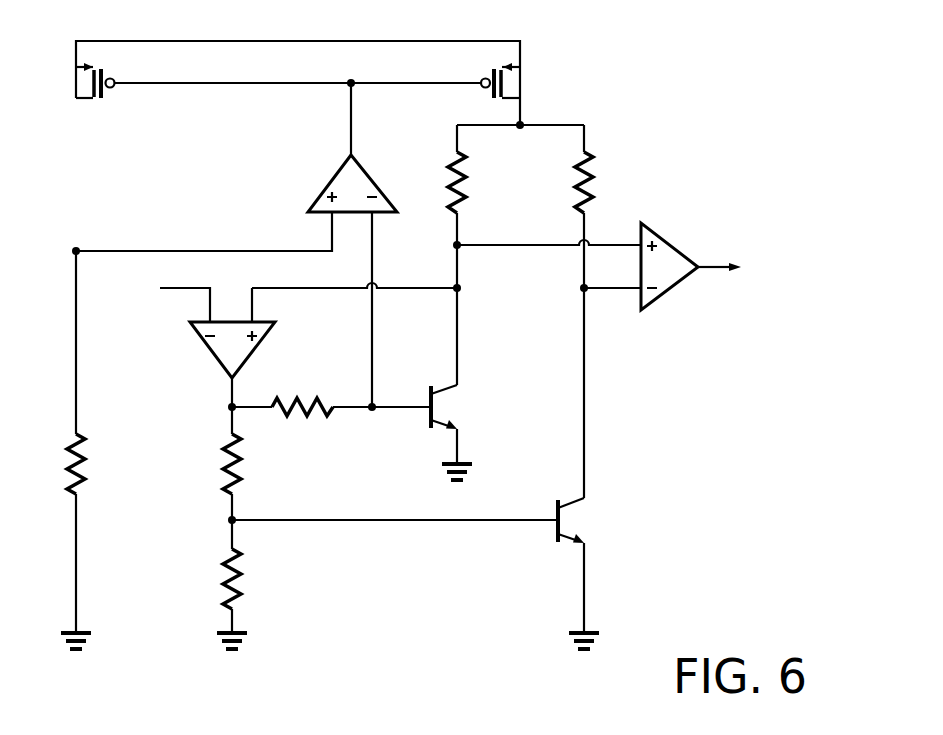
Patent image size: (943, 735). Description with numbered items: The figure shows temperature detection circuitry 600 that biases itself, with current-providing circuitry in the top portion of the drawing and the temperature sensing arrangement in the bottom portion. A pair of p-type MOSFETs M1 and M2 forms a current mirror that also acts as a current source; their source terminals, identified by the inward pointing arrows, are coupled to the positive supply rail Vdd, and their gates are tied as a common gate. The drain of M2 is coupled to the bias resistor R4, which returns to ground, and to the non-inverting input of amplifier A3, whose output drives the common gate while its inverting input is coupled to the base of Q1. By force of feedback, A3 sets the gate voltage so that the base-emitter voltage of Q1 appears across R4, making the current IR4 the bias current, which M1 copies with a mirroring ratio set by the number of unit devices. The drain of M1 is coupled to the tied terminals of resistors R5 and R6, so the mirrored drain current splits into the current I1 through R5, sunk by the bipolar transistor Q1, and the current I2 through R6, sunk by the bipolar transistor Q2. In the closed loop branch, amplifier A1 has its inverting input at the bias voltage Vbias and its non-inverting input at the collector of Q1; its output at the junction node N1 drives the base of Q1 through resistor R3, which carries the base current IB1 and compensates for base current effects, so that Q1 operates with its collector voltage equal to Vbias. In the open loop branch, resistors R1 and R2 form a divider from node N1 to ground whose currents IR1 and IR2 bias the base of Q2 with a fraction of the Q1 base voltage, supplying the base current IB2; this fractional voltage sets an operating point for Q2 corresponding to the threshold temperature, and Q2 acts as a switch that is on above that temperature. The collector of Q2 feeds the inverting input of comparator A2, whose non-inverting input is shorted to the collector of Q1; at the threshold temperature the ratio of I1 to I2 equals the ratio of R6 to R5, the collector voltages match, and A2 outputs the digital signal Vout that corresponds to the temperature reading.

The temperature detection circuitry 600 is at (694, 50).
The p-type MOSFET M1 is at (515, 80).
The p-type MOSFET M2 is at (80, 80).
The amplifier A1 is at (232, 364).
The comparator A2 is at (691, 269).
The amplifier A3 is at (349, 183).
The resistor R1 is at (219, 463).
The resistor R2 is at (222, 584).
The resistor R3 is at (331, 394).
The bias resistor R4 is at (64, 450).
The resistor R5 is at (442, 185).
The resistor R6 is at (570, 206).
The bipolar junction transistor Q1 is at (459, 432).
The bipolar junction transistor Q2 is at (587, 468).
The junction node N1 is at (219, 408).
The positive power supply rail Vdd is at (373, 27).
The bias voltage Vbias is at (131, 290).
The digital voltage signal Vout is at (764, 268).
The current I1 is at (479, 162).
The current I2 is at (605, 162).
The base current IB1 is at (320, 428).
The base current IB2 is at (433, 533).
The current through resistor R1 IR1 is at (252, 448).
The current through resistor R2 IR2 is at (252, 560).
The current through resistor R4 IR4 is at (98, 448).